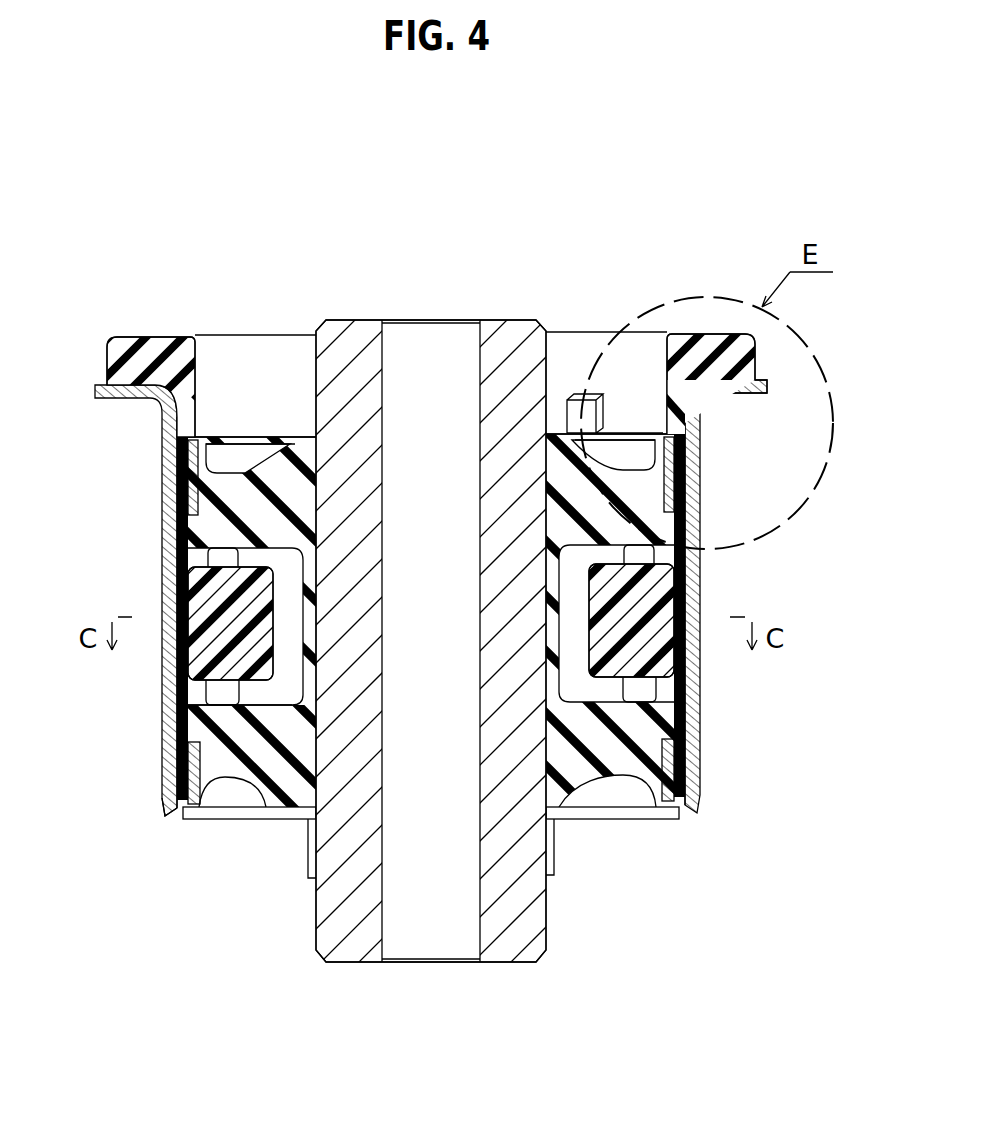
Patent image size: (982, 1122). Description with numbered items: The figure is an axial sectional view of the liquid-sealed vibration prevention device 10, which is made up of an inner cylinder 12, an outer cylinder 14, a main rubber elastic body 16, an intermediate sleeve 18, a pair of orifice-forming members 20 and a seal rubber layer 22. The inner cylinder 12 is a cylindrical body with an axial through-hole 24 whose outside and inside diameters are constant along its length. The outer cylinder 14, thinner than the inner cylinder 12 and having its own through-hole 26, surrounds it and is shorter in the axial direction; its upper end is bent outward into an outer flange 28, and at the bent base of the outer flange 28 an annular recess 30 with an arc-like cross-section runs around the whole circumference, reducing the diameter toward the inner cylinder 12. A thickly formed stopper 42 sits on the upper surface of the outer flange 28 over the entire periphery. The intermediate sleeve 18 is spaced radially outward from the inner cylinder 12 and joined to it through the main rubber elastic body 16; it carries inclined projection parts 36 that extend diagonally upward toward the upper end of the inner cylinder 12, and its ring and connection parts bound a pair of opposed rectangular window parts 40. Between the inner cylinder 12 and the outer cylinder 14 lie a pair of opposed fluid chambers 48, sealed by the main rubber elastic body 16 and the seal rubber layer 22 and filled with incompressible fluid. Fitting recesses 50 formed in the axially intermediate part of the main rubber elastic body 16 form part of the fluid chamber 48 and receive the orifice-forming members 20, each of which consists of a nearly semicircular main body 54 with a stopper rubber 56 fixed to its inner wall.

The liquid-sealed vibration prevention device 10 is at (263, 204).
The inner cylinder 12 is at (347, 322).
The outer cylinder 14 is at (697, 740).
The main rubber elastic body 16 is at (573, 777).
The intermediate sleeve 18 is at (192, 455).
The orifice-forming member 20 is at (197, 703).
The seal rubber layer 22 is at (180, 488).
The through-hole 24 is at (460, 960).
The through-hole 26 is at (163, 790).
The outer flange 28 is at (768, 390).
The annular recess 30 is at (701, 398).
The inclined projection part 36 is at (568, 395).
The rectangular window part 40 is at (183, 528).
The stopper 42 is at (755, 356).
The fluid chamber 48 is at (215, 782).
The fitting recess 50 is at (215, 552).
The main body 54 is at (197, 622).
The stopper rubber 56 is at (271, 705).